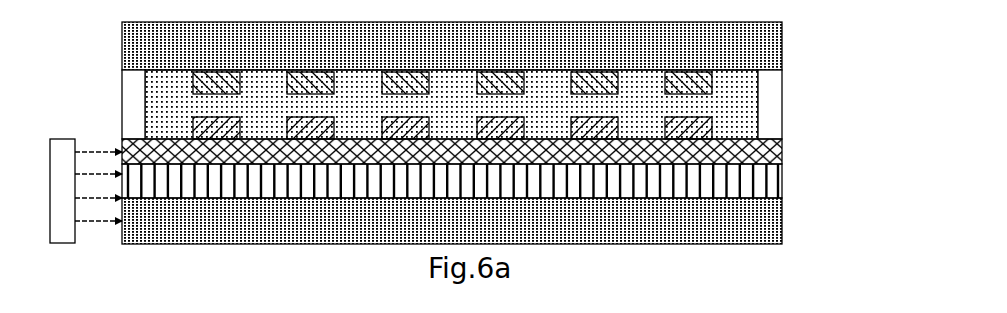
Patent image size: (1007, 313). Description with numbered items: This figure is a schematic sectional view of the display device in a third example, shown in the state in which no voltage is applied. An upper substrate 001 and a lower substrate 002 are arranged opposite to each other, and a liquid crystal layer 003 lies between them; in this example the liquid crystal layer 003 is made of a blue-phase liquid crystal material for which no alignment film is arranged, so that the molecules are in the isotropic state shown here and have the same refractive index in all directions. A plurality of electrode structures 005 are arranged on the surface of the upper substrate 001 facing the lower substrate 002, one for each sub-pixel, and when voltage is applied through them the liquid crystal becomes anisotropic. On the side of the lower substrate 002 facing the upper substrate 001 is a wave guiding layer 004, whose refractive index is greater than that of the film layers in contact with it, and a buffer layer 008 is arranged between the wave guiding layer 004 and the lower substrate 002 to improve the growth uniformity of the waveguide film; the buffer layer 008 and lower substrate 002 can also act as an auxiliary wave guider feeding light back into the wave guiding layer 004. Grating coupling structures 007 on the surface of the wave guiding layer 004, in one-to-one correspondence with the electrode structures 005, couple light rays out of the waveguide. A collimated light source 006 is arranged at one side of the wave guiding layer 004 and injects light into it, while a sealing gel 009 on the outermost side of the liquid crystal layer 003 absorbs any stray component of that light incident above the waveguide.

The upper substrate 001 is at (770, 50).
The lower substrate 002 is at (775, 221).
The liquid crystal layer 003 is at (760, 105).
The wave guiding layer 004 is at (775, 153).
The electrode structures 005 is at (758, 82).
The collimated light source 006 is at (70, 148).
The grating coupling structures 007 is at (760, 128).
The buffer layer 008 is at (768, 184).
The sealing gel 009 is at (137, 103).